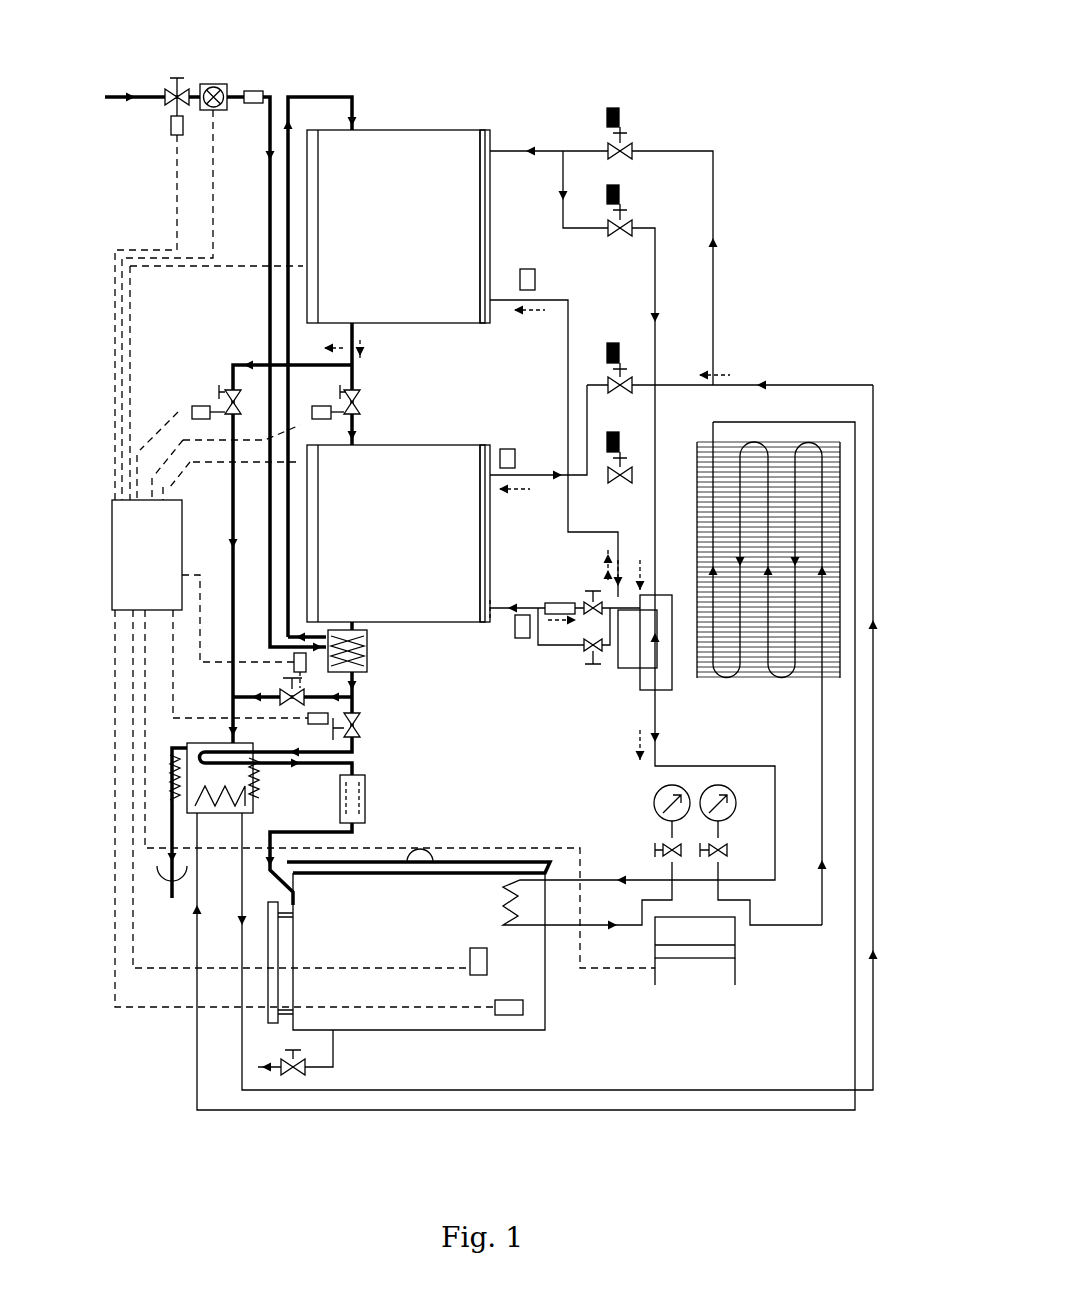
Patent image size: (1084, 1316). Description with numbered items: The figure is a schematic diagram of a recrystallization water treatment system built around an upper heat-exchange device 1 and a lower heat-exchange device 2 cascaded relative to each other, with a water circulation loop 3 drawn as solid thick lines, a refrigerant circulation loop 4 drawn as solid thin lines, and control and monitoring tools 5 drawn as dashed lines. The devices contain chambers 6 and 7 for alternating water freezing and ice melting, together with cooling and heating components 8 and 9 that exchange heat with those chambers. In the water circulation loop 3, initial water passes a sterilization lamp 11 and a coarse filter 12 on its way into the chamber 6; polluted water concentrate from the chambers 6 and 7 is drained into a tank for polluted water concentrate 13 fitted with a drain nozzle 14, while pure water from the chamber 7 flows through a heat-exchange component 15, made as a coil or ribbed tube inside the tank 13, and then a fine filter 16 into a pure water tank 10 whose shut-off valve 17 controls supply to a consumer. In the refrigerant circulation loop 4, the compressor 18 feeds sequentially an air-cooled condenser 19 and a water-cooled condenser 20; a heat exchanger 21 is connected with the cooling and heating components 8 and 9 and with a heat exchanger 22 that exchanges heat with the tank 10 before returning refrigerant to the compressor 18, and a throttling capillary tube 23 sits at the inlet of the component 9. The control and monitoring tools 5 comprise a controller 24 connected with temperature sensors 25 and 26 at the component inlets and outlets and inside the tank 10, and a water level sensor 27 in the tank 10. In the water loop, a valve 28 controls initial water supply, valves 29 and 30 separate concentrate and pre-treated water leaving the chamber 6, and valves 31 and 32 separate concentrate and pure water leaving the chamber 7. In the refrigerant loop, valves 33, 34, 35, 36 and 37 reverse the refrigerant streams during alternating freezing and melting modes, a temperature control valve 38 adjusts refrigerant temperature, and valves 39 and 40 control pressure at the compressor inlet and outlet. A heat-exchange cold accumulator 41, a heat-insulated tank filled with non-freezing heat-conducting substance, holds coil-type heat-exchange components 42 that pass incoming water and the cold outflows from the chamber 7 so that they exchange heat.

The upper heat-exchange device 1 is at (378, 130).
The lower heat-exchange device 2 is at (313, 493).
The water circulation loop 3 is at (270, 217).
The refrigerant circulation loop 4 is at (713, 193).
The control and monitoring tools 5 is at (177, 235).
The chamber 6 is at (388, 180).
The chamber 7 is at (372, 538).
The cooling and heating component 8 is at (486, 140).
The cooling and heating component 9 is at (485, 607).
The pure water tank 10 is at (450, 935).
The sterilization lamp 11 is at (207, 83).
The coarse filter 12 is at (253, 92).
The tank for polluted water concentrate 13 is at (197, 773).
The drain nozzle 14 is at (168, 872).
The heat-exchange component 15 is at (200, 758).
The fine filter 16 is at (343, 787).
The shut-off valve 17 is at (293, 1075).
The compressor 18 is at (708, 930).
The air-cooled condenser 19 is at (782, 512).
The water-cooled condenser 20 is at (172, 850).
The heat exchanger 21 is at (665, 605).
The heat exchanger 22 is at (527, 903).
The throttling capillary tube 23 is at (558, 600).
The controller 24 is at (147, 557).
The temperature sensors 25 is at (522, 615).
The temperature sensor 26 is at (520, 1015).
The water level sensor 27 is at (478, 975).
The valve 28 is at (172, 93).
The valve 29 is at (357, 387).
The valve 30 is at (222, 390).
The valve 31 is at (335, 712).
The valve 32 is at (280, 697).
The valve 33 is at (643, 141).
The valve 34 is at (643, 218).
The valve 35 is at (640, 385).
The valve 36 is at (640, 475).
The valve 37 is at (608, 613).
The temperature control valve 38 is at (610, 648).
The valve 39 is at (678, 855).
The valve 40 is at (724, 857).
The heat-exchange cold accumulator 41 is at (298, 660).
The heat-exchange components 42 is at (330, 650).